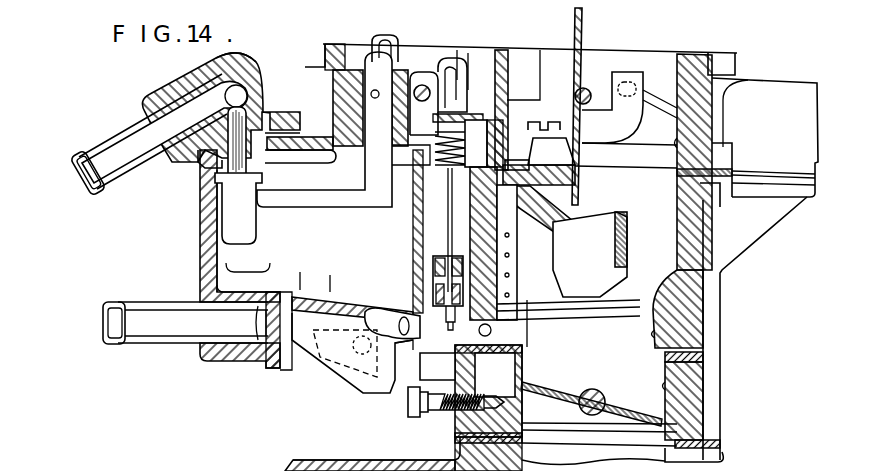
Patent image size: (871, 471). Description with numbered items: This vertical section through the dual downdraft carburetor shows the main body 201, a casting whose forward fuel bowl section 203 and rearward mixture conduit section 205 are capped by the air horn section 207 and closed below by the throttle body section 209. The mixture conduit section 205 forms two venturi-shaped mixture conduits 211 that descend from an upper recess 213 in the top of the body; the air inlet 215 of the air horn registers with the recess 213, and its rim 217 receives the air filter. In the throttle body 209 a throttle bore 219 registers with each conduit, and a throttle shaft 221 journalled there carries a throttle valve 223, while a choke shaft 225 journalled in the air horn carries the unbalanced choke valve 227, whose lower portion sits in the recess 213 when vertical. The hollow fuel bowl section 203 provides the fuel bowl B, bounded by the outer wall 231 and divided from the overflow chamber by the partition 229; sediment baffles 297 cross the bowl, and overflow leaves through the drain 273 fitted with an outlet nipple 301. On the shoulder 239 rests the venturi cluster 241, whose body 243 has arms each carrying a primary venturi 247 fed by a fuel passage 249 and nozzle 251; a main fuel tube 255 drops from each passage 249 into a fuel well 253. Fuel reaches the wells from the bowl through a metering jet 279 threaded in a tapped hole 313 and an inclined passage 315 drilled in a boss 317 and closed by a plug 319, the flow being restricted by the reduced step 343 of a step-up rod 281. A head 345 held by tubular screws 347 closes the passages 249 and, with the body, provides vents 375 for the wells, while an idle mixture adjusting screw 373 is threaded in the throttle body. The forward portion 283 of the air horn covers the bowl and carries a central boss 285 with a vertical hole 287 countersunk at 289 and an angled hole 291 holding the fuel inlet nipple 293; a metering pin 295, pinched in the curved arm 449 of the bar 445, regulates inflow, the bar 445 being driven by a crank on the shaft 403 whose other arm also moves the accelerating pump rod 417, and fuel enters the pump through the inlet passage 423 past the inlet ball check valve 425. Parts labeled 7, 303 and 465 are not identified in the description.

The float bowl base 7 is at (343, 457).
The main body 201 is at (751, 265).
The fuel bowl section 203 is at (190, 235).
The mixture conduit section 205 is at (712, 305).
The air horn section 207 is at (302, 68).
The throttle body section 209 is at (705, 382).
The mixture conduit 211 is at (660, 333).
The upper recess 213 is at (680, 221).
The air inlet 215 is at (705, 141).
The rim 217 is at (735, 62).
The throttle bore 219 is at (706, 398).
The throttle shaft 221 is at (590, 415).
The throttle valve 223 is at (600, 398).
The choke shaft 225 is at (590, 88).
The choke valve 227 is at (576, 42).
The wall or partition 229 is at (272, 264).
The outer wall 231 is at (200, 210).
The upper surface or shoulder 239 is at (517, 248).
The venturi cluster 241 is at (633, 251).
The cluster body 243 is at (578, 250).
The primary venturi 247 is at (612, 218).
The fuel passage 249 is at (560, 186).
The fuel nozzle 251 is at (582, 226).
The fuel well 253 is at (535, 319).
The main fuel tube 255 is at (535, 305).
The outlet passage or drain 273 is at (262, 358).
The metering jet 279 is at (434, 262).
The step-up rod 281 is at (446, 220).
The forward portion 283 is at (312, 162).
The central boss 285 is at (216, 64).
The vertical cylindrical hole 287 is at (246, 88).
The countersink 289 is at (198, 162).
The angled hole 291 is at (212, 96).
The fuel inlet nipple 293 is at (116, 140).
The metering pin 295 is at (250, 112).
The baffle 297 is at (326, 274).
The outlet nipple 301 is at (150, 344).
The cup 303 is at (232, 200).
The tapped hole 313 is at (446, 312).
The inclined fuel passage 315 is at (448, 330).
The boss 317 is at (410, 350).
The plug 319 is at (372, 322).
The step 343 is at (436, 288).
The head 345 is at (566, 152).
The tubular screw 347 is at (540, 124).
The idle mixture adjusting screw 373 is at (408, 412).
The vent 375 is at (528, 158).
The shaft 403 is at (436, 72).
The accelerating pump rod 417 is at (384, 38).
The pump inlet passage 423 is at (278, 368).
The inlet ball check valve 425 is at (356, 349).
The bar 445 is at (422, 85).
The curved arm 449 is at (322, 206).
The intake pipe 465 is at (785, 95).
The fuel bowl B is at (198, 254).